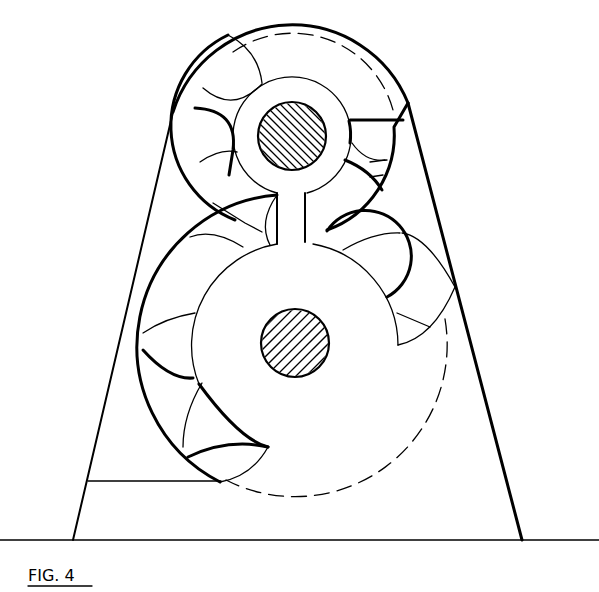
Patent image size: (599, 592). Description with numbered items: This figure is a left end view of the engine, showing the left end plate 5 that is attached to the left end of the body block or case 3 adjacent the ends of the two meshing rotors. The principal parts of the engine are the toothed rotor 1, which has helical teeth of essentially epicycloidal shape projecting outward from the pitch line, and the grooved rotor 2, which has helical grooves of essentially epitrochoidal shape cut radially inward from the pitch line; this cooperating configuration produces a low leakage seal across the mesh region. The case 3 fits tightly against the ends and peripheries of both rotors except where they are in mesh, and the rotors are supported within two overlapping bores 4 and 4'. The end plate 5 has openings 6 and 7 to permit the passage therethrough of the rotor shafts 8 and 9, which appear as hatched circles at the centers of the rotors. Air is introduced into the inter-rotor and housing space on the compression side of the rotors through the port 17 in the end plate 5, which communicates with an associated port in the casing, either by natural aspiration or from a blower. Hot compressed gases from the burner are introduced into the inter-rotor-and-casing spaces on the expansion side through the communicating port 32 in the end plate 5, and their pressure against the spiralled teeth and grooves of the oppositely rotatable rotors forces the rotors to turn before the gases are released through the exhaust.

The toothed rotor 1 is at (157, 350).
The grooved rotor 2 is at (205, 170).
The case 3 is at (385, 55).
The bore 4 is at (195, 98).
The bore 4' is at (196, 432).
The left end plate 5 is at (485, 458).
The opening 6 is at (300, 380).
The opening 7 is at (313, 105).
The shaft 8 is at (300, 343).
The shaft 9 is at (288, 102).
The port 17 is at (413, 185).
The port 32 is at (150, 249).